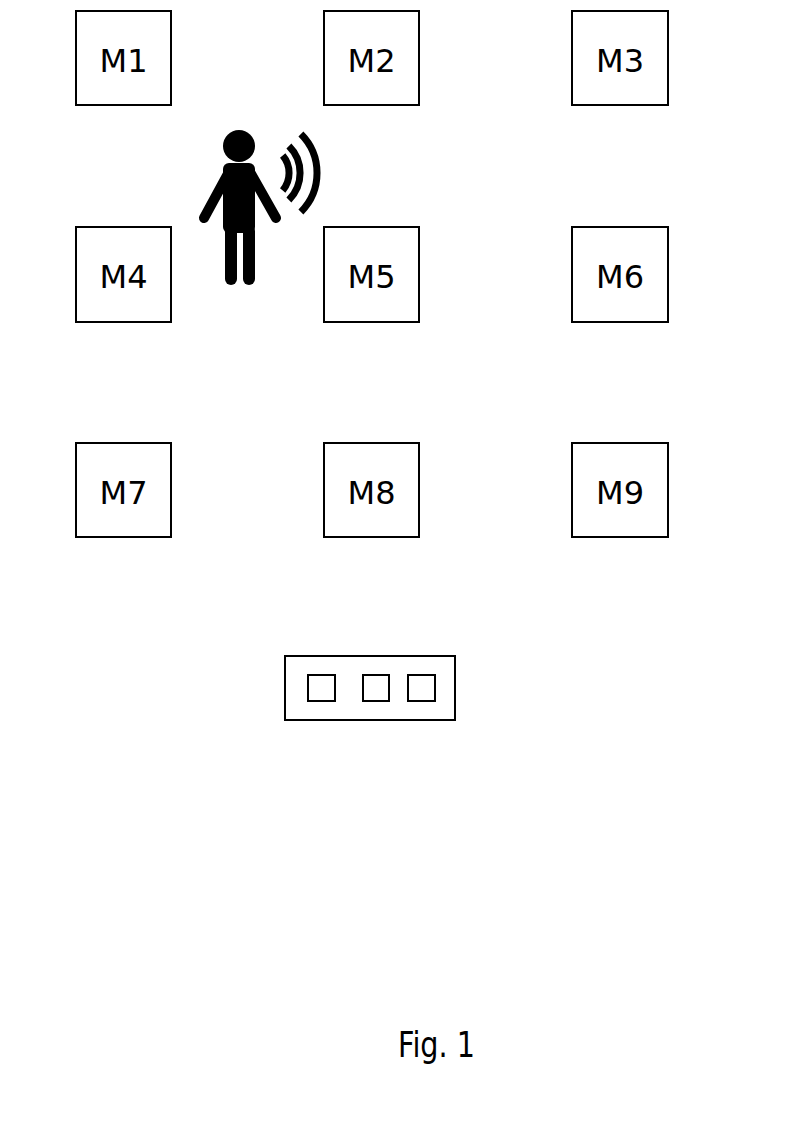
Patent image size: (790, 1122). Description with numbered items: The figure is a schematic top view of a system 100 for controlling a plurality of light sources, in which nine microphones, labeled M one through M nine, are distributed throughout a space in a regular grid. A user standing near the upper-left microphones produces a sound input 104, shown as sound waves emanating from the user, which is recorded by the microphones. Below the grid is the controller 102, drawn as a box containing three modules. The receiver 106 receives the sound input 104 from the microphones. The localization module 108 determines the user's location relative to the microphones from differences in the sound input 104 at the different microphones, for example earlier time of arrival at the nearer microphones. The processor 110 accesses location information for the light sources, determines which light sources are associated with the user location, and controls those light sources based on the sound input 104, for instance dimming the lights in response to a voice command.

The system 100 is at (462, 936).
The controller 102 is at (285, 688).
The sound input 104 is at (303, 153).
The receiver 106 is at (313, 688).
The localization module 108 is at (372, 688).
The processor 110 is at (427, 688).